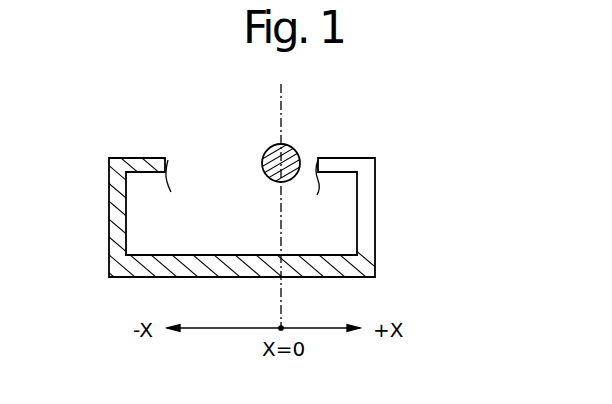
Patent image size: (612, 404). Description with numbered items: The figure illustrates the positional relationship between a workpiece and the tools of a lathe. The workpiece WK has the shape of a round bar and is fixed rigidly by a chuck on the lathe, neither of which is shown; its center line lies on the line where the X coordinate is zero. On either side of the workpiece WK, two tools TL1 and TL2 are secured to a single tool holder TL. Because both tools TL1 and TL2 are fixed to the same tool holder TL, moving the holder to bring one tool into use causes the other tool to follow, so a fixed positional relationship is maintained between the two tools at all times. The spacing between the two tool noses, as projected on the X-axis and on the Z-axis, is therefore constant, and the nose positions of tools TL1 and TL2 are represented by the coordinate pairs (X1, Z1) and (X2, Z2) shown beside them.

The tool holder TL is at (350, 277).
The first tool TL1 is at (348, 158).
The second tool TL2 is at (168, 160).
The workpiece WK is at (297, 156).